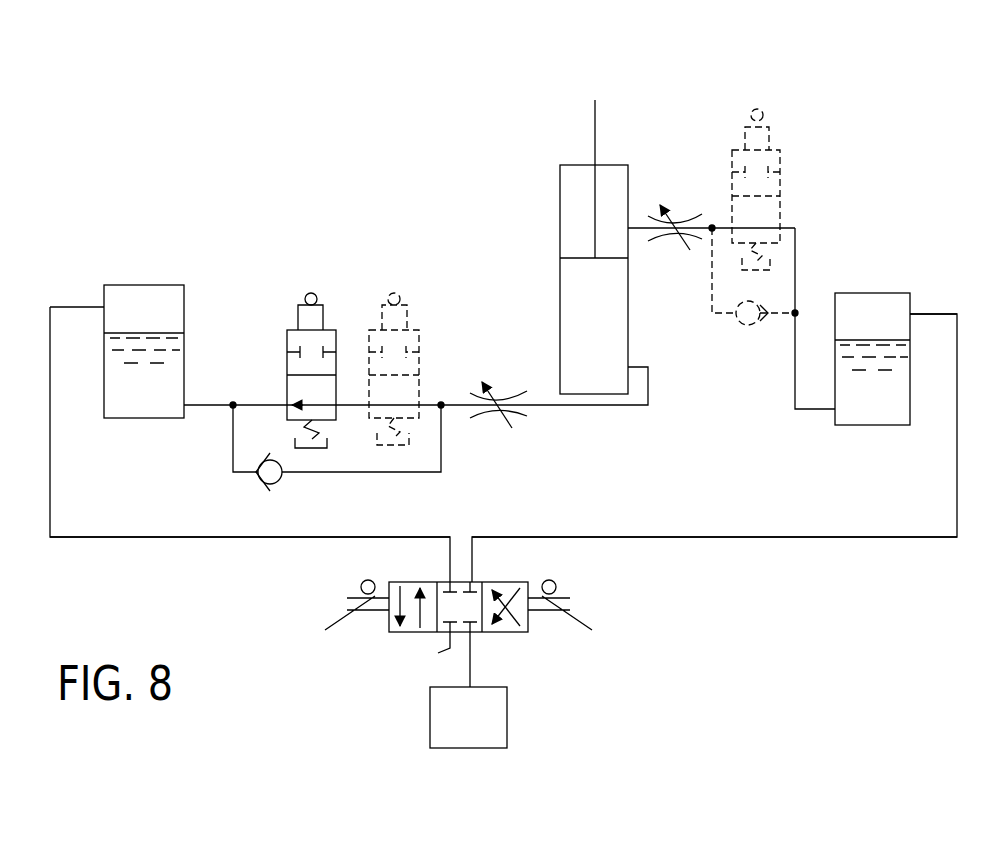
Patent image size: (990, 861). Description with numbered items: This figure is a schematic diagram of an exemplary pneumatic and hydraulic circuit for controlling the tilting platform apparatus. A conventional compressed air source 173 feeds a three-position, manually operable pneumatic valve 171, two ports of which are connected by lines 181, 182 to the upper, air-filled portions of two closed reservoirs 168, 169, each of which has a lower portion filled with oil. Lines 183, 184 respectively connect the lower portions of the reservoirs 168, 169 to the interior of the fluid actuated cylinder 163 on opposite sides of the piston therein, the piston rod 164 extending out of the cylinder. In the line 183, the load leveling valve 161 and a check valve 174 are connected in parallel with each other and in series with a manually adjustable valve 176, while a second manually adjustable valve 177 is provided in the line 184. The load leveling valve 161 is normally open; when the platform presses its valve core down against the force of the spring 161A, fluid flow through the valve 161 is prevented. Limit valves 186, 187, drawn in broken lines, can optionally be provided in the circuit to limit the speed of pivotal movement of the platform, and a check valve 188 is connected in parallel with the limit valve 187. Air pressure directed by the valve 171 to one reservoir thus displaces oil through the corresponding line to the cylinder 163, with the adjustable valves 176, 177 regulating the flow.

The load leveling valve 161 is at (286, 360).
The spring 161A is at (308, 422).
The fluid actuated cylinder 163 is at (558, 315).
The piston rod 164 is at (594, 133).
The closed reservoir 168 is at (185, 290).
The closed reservoir 169 is at (912, 293).
The manually operable pneumatic valve 171 is at (384, 622).
The compressed air source 173 is at (465, 740).
The check valve 174 is at (280, 484).
The manually adjustable valve 176 is at (485, 417).
The manually adjustable valve 177 is at (678, 222).
The line 181 is at (148, 540).
The line 182 is at (727, 540).
The line 183 is at (208, 408).
The line 184 is at (806, 412).
The limit valve 186 is at (420, 372).
The limit valve 187 is at (782, 197).
The check valve 188 is at (740, 324).